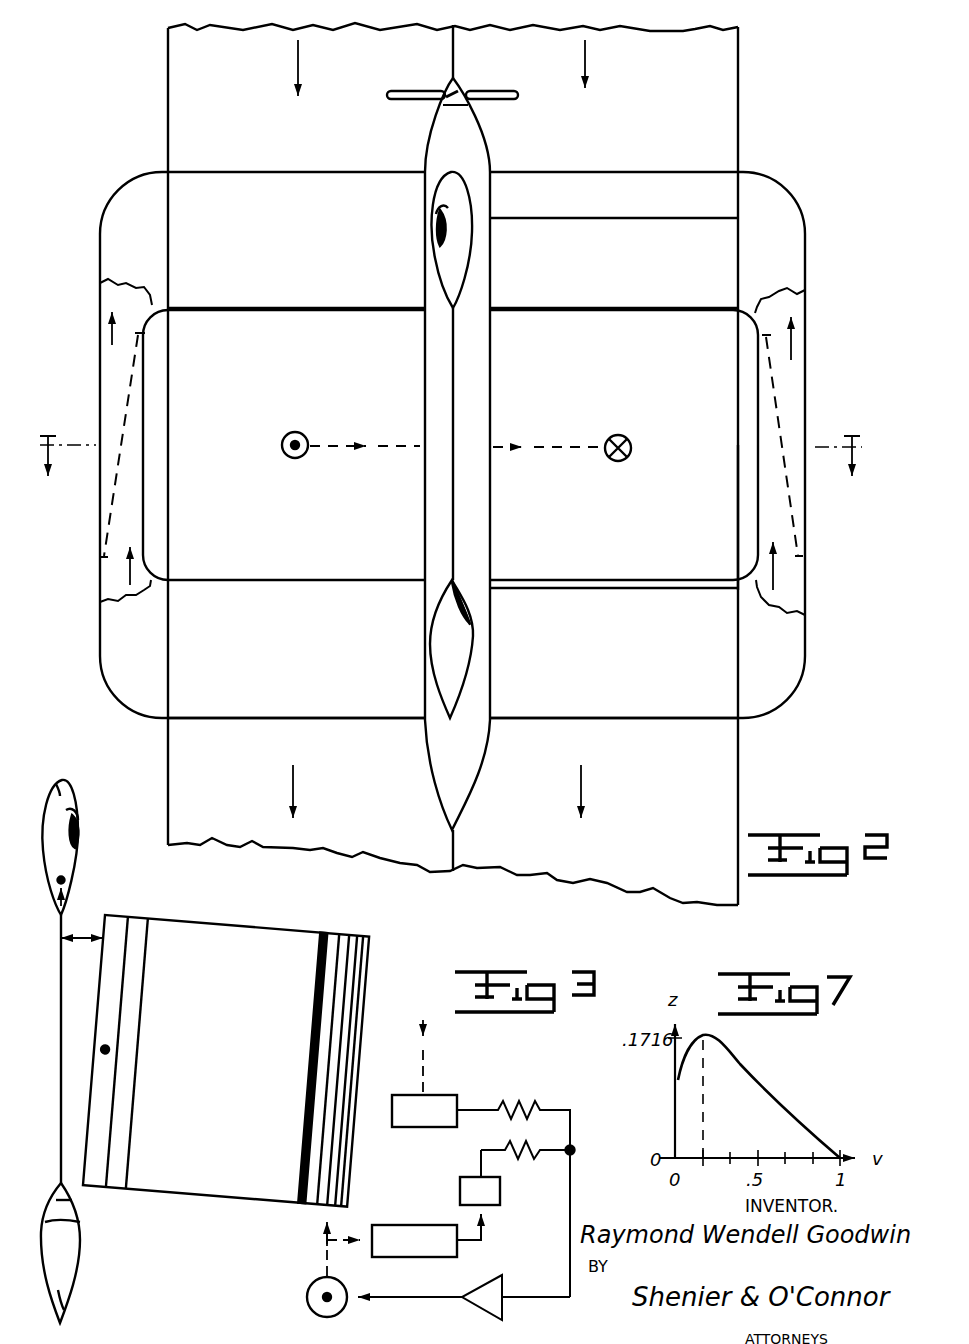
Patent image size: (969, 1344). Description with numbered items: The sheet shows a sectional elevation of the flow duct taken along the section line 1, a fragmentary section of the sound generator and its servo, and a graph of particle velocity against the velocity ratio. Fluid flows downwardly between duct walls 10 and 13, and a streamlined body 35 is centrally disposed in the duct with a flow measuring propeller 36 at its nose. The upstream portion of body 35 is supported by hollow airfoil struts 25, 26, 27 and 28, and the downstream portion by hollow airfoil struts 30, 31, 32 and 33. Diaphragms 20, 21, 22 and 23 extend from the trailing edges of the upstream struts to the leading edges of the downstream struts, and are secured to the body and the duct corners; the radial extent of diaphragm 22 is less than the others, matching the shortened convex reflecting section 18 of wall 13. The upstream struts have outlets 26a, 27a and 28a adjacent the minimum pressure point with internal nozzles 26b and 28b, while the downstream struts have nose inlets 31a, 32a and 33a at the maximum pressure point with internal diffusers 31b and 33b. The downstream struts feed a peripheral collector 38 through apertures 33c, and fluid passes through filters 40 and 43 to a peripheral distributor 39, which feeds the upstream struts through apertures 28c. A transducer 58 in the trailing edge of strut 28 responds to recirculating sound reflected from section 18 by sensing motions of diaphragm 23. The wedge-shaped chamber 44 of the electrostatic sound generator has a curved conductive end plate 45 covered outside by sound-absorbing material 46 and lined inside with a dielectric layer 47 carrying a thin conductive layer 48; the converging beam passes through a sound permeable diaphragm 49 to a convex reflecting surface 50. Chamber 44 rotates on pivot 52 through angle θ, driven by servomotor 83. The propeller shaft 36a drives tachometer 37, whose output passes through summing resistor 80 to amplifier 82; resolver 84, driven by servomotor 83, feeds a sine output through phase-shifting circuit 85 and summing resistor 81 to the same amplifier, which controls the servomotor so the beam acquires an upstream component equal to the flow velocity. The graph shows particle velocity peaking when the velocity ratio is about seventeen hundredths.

In FIG. 2, the section line 1- 1 is at (451, 485).
In FIG. 2, the duct wall 10 is at (318, 159).
In FIG. 2, the duct wall 13 is at (606, 159).
In FIG. 2, the convex reflecting section 18 is at (737, 512).
In FIG. 2, the diaphragm 20 is at (281, 389).
In FIG. 2, the diaphragm 21 is at (452, 368).
In FIG. 2, the diaphragm 22 is at (629, 383).
In FIG. 3, the diaphragm 23 is at (60, 1032).
In FIG. 2, the upstream strut 25 is at (302, 256).
In FIG. 2, the upstream strut 26 is at (440, 280).
In FIG. 2, the outlet 26a is at (432, 237).
In FIG. 2, the internal nozzle 26b is at (436, 216).
In FIG. 2, the upstream strut 27 is at (607, 211).
In FIG. 2, the outlet 27a is at (635, 218).
In FIG. 3, the upstream strut 28 is at (48, 854).
In FIG. 3, the outlet 28a is at (86, 834).
In FIG. 3, the internal nozzle 28b is at (74, 812).
In FIG. 3, the aperture 28c is at (58, 790).
In FIG. 2, the downstream strut 30 is at (285, 673).
In FIG. 2, the downstream strut 31 is at (440, 678).
In FIG. 2, the nose inlet 31a is at (438, 564).
In FIG. 2, the internal diffuser 31b is at (455, 604).
In FIG. 2, the downstream strut 32 is at (610, 683).
In FIG. 2, the nose inlet 32a is at (606, 590).
In FIG. 3, the downstream strut 33 is at (80, 1280).
In FIG. 3, the nose inlet 33a is at (68, 1175).
In FIG. 3, the internal diffuser 33b is at (80, 1222).
In FIG. 3, the aperture 33c is at (63, 1291).
In FIG. 2, the streamlined body 35 is at (495, 528).
In FIG. 2, the propeller 36 is at (460, 80).
In FIG. 3, the propeller shaft 36a is at (424, 1058).
In FIG. 3, the alternating current tachometer 37 is at (414, 1128).
In FIG. 2, the peripheral collector 38 is at (132, 684).
In FIG. 2, the peripheral distributor 39 is at (142, 190).
In FIG. 2, the filter 40 is at (125, 436).
In FIG. 2, the filter 43 is at (780, 436).
In FIG. 3, the wedge-shaped chamber 44 is at (172, 1180).
In FIG. 3, the end plate 45 is at (348, 938).
In FIG. 3, the sound-absorbing material 46 is at (358, 962).
In FIG. 3, the dielectric layer 47 is at (322, 938).
In FIG. 3, the conductive layer 48 is at (312, 1046).
In FIG. 3, the sound permeable diaphragm 49 is at (146, 975).
In FIG. 3, the convex reflecting surface 50 is at (130, 1021).
In FIG. 3, the pivot 52 is at (107, 1050).
In FIG. 3, the transducer 58 is at (64, 900).
In FIG. 3, the summing resistor 80 is at (522, 1110).
In FIG. 3, the summing resistor 81 is at (516, 1154).
In FIG. 3, the alternating current amplifier 82 is at (500, 1278).
In FIG. 3, the servomotor 83 is at (326, 1295).
In FIG. 3, the resolver 84 is at (410, 1258).
In FIG. 3, the phase-shifting circuit 85 is at (460, 1190).